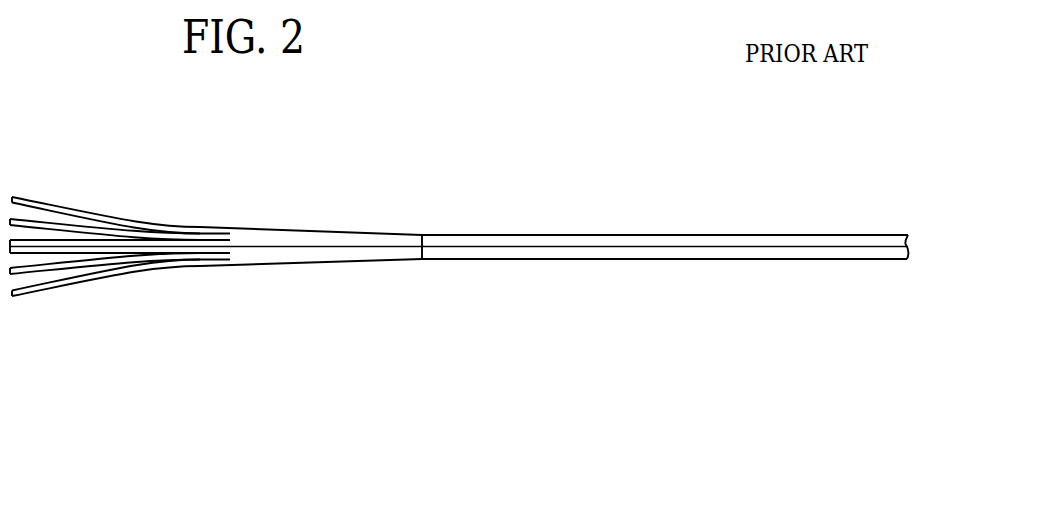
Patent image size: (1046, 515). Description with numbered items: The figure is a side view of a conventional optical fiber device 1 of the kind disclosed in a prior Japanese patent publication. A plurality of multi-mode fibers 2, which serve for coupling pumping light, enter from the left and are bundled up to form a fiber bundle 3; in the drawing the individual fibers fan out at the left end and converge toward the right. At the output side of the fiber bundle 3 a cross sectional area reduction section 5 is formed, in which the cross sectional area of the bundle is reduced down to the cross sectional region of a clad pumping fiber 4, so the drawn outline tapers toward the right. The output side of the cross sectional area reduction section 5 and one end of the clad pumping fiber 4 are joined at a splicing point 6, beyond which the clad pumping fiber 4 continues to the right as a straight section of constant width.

The optical fiber device 1 is at (594, 202).
The multi-mode fibers 2 is at (113, 242).
The fiber bundle 3 is at (415, 322).
The clad pumping fiber 4 is at (907, 334).
The cross sectional area reduction section 5 is at (350, 232).
The splicing point 6 is at (421, 240).